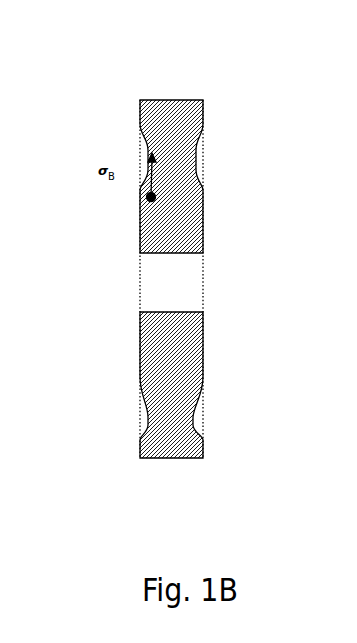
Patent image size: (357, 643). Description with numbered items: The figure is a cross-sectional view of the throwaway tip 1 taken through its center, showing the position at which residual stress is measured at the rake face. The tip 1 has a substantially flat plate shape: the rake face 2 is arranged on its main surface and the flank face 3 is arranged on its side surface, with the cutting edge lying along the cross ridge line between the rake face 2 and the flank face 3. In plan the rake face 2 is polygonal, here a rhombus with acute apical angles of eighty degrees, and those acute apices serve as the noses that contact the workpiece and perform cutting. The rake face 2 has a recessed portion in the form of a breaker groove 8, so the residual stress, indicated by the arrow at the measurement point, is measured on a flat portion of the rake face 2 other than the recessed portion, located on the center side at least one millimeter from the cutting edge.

The throwaway tip 1 is at (116, 348).
The rake face 2 is at (133, 227).
The flank face 3 is at (168, 100).
The breaker groove 8 is at (140, 423).